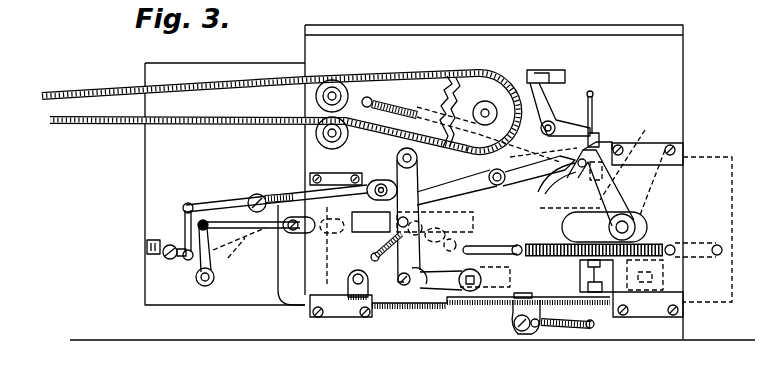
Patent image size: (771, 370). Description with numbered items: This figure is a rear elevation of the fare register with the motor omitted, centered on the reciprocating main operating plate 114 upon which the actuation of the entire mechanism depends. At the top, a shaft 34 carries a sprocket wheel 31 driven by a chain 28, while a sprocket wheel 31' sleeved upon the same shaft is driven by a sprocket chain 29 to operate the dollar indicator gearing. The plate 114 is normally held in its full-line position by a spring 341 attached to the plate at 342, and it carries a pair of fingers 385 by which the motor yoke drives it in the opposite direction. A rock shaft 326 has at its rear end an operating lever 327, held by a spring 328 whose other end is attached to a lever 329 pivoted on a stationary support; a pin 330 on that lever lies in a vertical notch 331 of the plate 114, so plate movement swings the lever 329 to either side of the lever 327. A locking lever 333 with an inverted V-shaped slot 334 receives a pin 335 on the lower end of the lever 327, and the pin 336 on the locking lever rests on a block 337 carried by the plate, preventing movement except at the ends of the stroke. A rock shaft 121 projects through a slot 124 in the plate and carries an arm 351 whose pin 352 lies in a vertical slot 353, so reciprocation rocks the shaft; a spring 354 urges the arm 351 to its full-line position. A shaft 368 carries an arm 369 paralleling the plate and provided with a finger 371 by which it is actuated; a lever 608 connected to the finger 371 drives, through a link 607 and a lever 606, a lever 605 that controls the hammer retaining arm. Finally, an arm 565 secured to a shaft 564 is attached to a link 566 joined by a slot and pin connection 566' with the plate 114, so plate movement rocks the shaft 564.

The chain 28 is at (52, 99).
The sprocket chain 29 is at (84, 90).
The sprocket wheel 31 is at (497, 119).
The sprocket wheel 31' is at (447, 60).
The shaft 34 is at (490, 114).
The spring 354 is at (404, 103).
The pin 352 is at (612, 165).
The vertical slot 353 is at (593, 177).
The arm 351 is at (568, 188).
The slot 124 is at (592, 214).
The rock shaft 121 is at (630, 224).
The main operating plate 114 is at (412, 182).
The shaft 368 is at (506, 177).
The arm 369 is at (478, 190).
The pin 330 is at (425, 188).
The rock shaft 326 is at (418, 159).
The operating lever 327 is at (361, 258).
The inverted V-shaped slot 334 is at (417, 285).
The pin 336 is at (466, 272).
The finger 371 is at (377, 180).
The lever 329 is at (371, 222).
The spring 328 is at (377, 250).
The vertical notch 331 is at (327, 258).
The locking lever 333 is at (385, 282).
The pin 335 is at (400, 282).
The block 337 is at (453, 285).
The spring 341 is at (562, 257).
The spring attachment point 342 is at (674, 253).
The fingers 385 is at (601, 293).
The lever 608 is at (231, 205).
The link 607 is at (189, 203).
The lever 605 is at (153, 240).
The lever 606 is at (163, 257).
The arm 565 is at (213, 262).
The shaft 564 is at (199, 281).
The link 566 is at (251, 244).
The slot and pin connection 566' is at (313, 241).